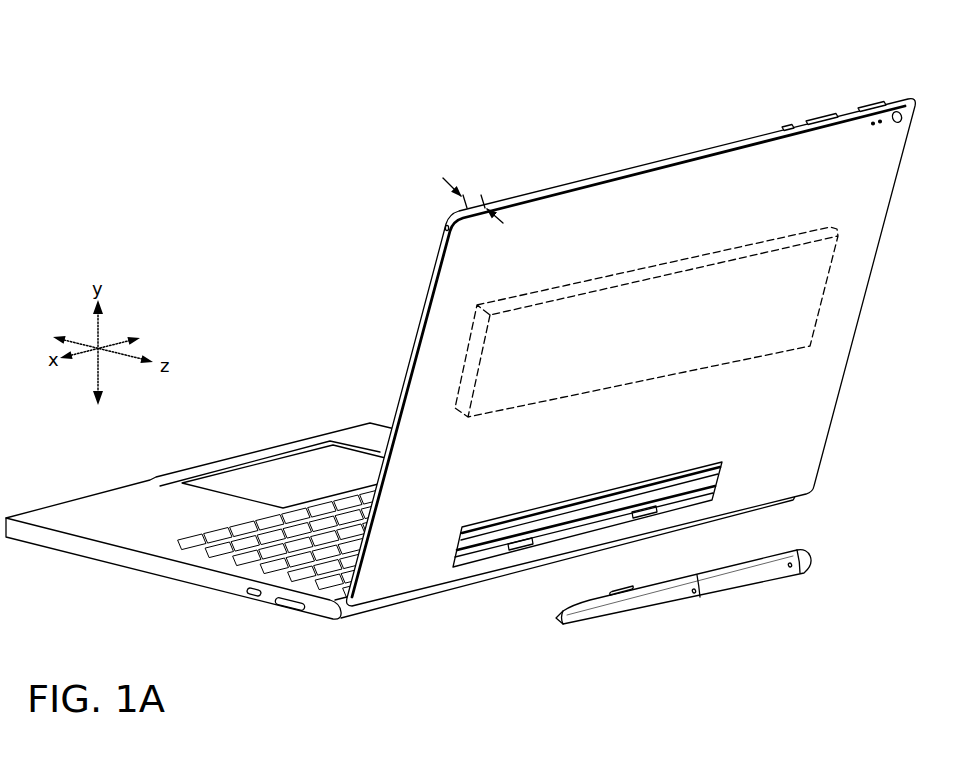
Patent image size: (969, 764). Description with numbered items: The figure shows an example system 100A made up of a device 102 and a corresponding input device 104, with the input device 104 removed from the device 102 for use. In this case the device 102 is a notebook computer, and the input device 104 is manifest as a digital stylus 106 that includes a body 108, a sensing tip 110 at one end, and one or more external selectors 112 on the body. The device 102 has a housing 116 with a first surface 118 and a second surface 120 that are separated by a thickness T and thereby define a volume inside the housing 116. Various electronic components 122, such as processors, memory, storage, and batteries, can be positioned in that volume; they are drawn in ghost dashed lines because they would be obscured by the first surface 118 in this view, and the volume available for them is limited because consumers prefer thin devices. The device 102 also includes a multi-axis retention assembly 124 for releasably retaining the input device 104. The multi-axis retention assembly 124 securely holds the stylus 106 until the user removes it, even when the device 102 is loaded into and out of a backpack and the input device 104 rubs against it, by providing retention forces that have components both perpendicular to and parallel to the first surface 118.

The system 100A is at (522, 24).
The device 102 is at (460, 352).
The input device 104 is at (676, 645).
The digital stylus 106 is at (625, 645).
The body 108 is at (668, 605).
The sensing tip 110 is at (558, 623).
The external selectors 112 is at (536, 615).
The housing 116 is at (631, 346).
The first surface 118 is at (862, 202).
The second surface 120 is at (720, 138).
The electronic components 122 is at (697, 256).
The multi-axis retention assembly 124 is at (628, 484).